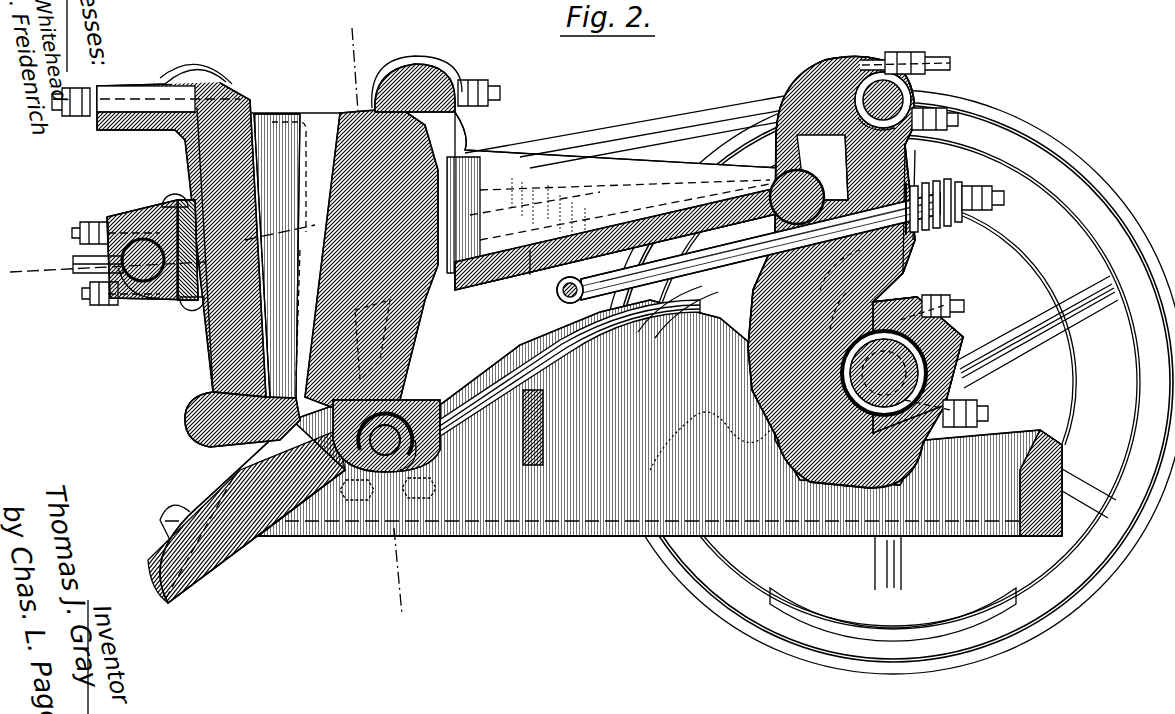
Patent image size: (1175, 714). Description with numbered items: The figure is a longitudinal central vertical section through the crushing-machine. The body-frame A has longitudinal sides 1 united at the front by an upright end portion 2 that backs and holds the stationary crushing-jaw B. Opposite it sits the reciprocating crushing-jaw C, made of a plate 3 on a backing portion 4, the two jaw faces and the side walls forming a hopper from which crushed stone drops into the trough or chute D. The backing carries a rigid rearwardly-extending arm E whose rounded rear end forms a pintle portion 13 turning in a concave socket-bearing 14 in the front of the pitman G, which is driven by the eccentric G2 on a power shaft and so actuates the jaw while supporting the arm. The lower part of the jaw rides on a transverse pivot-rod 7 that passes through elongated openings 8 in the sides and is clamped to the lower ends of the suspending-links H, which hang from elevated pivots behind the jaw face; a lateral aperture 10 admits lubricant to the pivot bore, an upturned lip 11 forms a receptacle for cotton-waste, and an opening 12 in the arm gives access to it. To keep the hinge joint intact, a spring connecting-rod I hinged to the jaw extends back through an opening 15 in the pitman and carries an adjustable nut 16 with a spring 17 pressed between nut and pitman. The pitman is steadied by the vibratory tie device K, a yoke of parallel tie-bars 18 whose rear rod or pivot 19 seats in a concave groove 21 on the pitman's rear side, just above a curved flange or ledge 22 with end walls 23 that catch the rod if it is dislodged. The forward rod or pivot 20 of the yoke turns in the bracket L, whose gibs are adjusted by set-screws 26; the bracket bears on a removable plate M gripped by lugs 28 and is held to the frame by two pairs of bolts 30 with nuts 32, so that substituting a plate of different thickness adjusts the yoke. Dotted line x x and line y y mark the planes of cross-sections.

The sides 1 is at (710, 441).
The end portion 2 is at (222, 356).
The plate 3 is at (299, 101).
The backing portion 4 is at (452, 80).
The pivot-rod 7 is at (388, 491).
The openings 8 is at (430, 432).
The lateral aperture 10 is at (420, 412).
The lip 11 is at (470, 405).
The opening 12 is at (516, 262).
The pintle portion 13 is at (772, 189).
The concave socket-bearing 14 is at (855, 272).
The opening 15 is at (790, 250).
The adjustable nut 16 is at (975, 186).
The spring 17 is at (928, 180).
The tie-bars 18 is at (665, 126).
The transverse rod or pivot 19 is at (903, 90).
The transverse rod or pivot 20 is at (139, 296).
The concave groove 21 is at (862, 64).
The curved flange or ledge 22 is at (952, 108).
The end walls or flanges 23 is at (920, 92).
The bolts or set-screws 26 is at (76, 263).
The lugs 28 is at (196, 318).
The bolts 30 is at (76, 236).
The nuts 32 is at (100, 224).
The body-frame A is at (613, 434).
The crushing-jaw B is at (179, 255).
The reciprocating crushing-jaw C is at (372, 275).
The trough or chute D is at (230, 498).
The arm E is at (616, 201).
The pitman G is at (768, 350).
The eccentric G2 is at (930, 296).
The suspending-links H is at (424, 460).
The spring connecting-rod I is at (692, 296).
The vibratory tie device K is at (632, 123).
The bracket L is at (179, 262).
The plate M is at (162, 204).
The line x x is at (373, 322).
The line y y is at (167, 253).